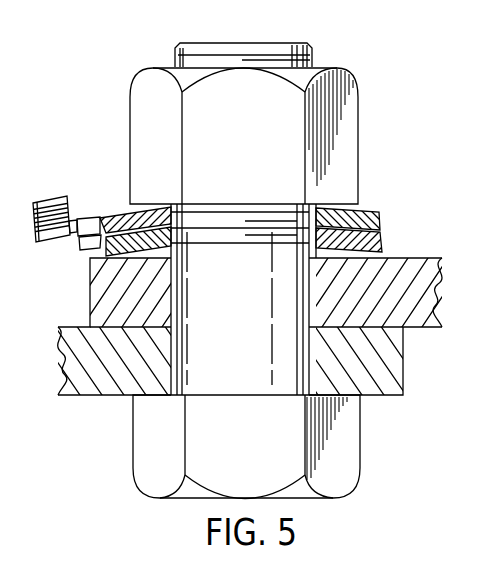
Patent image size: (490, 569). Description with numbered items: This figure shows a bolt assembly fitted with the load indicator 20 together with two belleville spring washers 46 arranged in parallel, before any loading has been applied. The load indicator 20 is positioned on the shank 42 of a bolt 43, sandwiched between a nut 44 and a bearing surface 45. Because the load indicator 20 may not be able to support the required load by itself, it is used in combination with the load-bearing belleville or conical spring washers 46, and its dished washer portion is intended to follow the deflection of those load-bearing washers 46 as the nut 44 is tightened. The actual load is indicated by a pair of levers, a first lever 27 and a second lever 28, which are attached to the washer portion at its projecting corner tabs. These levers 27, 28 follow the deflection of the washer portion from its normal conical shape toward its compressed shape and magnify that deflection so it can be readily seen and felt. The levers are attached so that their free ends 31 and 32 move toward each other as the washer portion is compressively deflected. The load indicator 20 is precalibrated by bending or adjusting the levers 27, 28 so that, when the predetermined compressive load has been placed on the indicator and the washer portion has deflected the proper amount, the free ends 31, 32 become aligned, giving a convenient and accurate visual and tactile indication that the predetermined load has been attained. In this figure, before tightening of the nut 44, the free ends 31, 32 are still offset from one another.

The load indicator 20 is at (381, 206).
The first lever 27 is at (91, 221).
The second lever 28 is at (35, 224).
The free end of first lever 31 is at (84, 250).
The free end of second lever 32 is at (45, 198).
The shank 42 is at (313, 56).
The bolt 43 is at (345, 447).
The nut 44 is at (351, 153).
The bearing surface 45 is at (423, 257).
The belleville or conical spring washers 46 is at (383, 248).